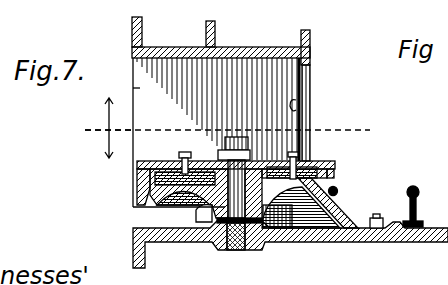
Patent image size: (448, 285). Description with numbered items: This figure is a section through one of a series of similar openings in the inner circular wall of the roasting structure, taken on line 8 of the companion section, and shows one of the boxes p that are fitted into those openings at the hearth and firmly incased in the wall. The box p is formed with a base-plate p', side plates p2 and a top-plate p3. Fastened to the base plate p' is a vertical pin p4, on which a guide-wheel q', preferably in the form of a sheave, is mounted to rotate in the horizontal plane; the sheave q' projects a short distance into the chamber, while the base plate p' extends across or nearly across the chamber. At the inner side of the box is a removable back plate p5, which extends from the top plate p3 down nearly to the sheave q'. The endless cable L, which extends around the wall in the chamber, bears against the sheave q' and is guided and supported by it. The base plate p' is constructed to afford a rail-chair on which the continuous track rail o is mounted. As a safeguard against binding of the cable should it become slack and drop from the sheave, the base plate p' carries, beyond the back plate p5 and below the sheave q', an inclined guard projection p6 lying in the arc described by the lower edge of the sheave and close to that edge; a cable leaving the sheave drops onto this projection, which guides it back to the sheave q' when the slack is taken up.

The top-plate p3 is at (265, 47).
The side plates p2 is at (133, 88).
The line 8 is at (102, 132).
The box p is at (109, 144).
The endless cable L is at (337, 189).
The inclined guard projection p6 is at (340, 226).
The guide-wheel q' is at (179, 148).
The removable back plate p5 is at (300, 100).
The vertical pin p4 is at (236, 250).
The base-plate p' is at (290, 246).
The continuous track rail o is at (424, 196).